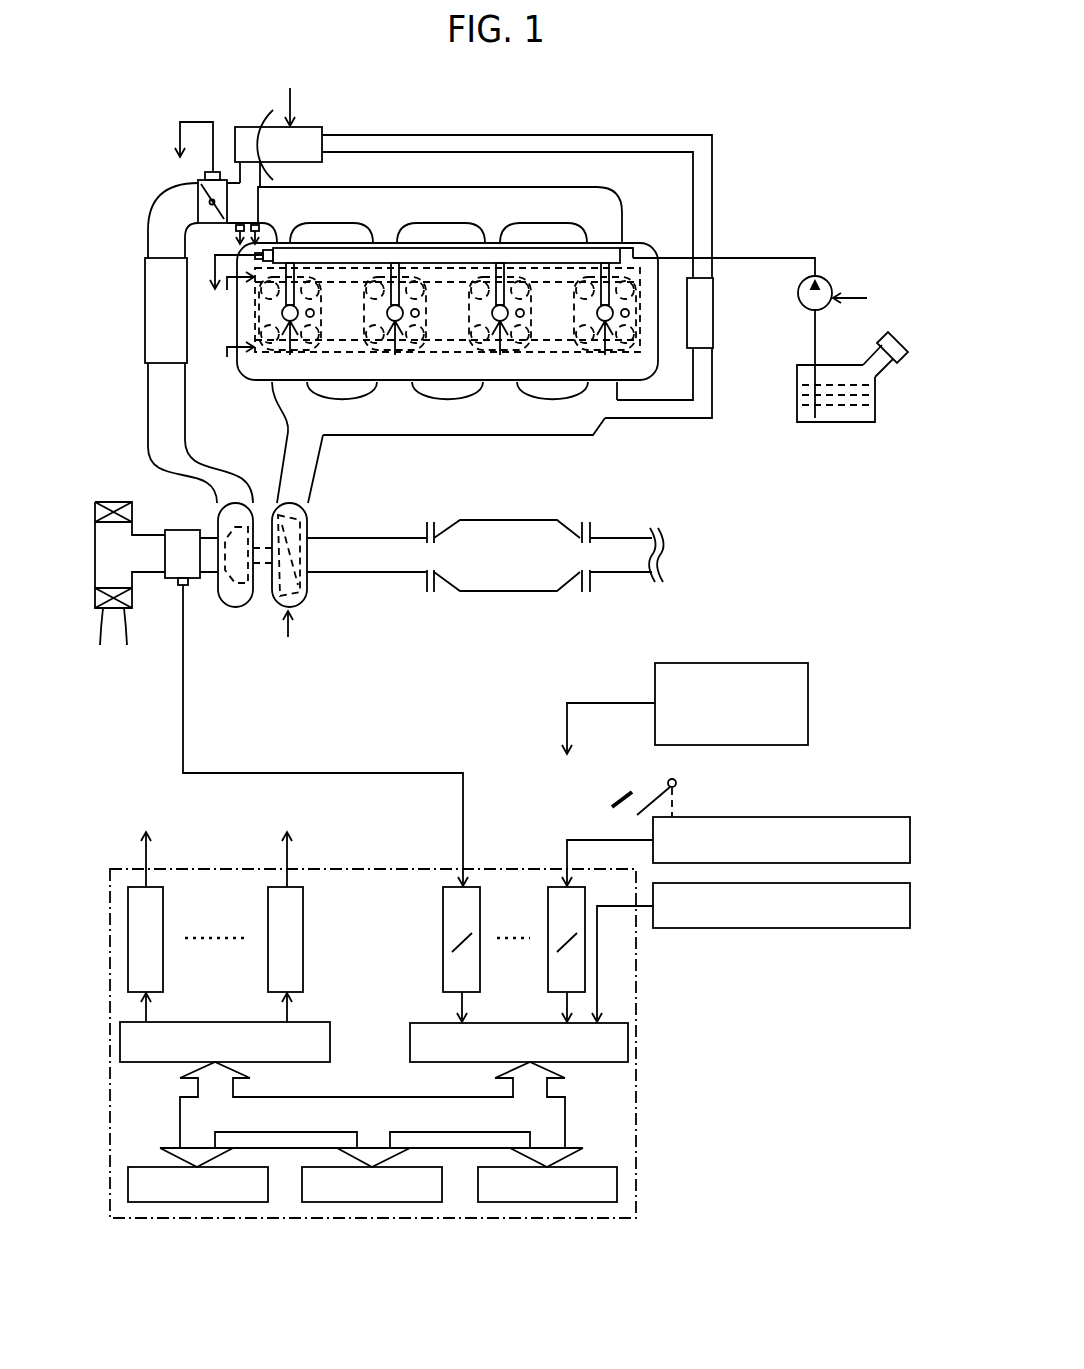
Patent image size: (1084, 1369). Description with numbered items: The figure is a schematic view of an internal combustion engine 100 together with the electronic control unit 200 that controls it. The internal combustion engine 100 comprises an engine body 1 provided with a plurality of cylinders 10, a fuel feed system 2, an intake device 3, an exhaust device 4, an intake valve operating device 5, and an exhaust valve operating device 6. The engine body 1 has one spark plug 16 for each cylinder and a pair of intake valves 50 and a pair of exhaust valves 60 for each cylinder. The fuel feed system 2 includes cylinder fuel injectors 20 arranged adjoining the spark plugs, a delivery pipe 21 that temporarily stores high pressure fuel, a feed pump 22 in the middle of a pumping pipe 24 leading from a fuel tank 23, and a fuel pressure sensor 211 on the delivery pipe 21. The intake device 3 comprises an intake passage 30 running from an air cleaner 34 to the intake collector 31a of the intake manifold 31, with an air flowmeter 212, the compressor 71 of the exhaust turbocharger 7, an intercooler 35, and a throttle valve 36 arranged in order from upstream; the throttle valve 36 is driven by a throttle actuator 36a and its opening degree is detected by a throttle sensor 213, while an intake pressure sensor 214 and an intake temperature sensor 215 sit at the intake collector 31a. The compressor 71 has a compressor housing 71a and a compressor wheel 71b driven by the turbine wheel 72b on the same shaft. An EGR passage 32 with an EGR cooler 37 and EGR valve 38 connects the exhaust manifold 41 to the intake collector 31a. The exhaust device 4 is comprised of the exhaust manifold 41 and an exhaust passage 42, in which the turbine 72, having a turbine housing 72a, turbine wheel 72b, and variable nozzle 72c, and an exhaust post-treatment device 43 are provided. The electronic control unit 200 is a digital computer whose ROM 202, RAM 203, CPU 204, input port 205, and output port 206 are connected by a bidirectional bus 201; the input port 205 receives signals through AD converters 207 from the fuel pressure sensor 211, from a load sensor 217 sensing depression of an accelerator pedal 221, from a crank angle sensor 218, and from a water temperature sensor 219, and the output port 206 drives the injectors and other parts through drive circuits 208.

The engine body 1 is at (647, 243).
The fuel feed system 2 is at (790, 242).
The intake device 3 is at (103, 243).
The exhaust device 4 is at (558, 461).
The intake valve operating device 5 is at (640, 283).
The exhaust valve operating device 6 is at (632, 330).
The exhaust turbocharger 7 is at (335, 665).
The cylinder 10 is at (620, 283).
The spark plug 16 is at (312, 318).
The cylinder fuel injector 20 is at (620, 310).
The delivery pipe 21 is at (604, 248).
The feed pump 22 is at (830, 276).
The fuel tank 23 is at (834, 423).
The pumping pipe 24 is at (737, 257).
The intake passage 30 is at (148, 420).
The intake manifold 31 is at (500, 188).
The intake collector 31a is at (262, 188).
The EGR passage 32 is at (477, 136).
The air cleaner 34 is at (133, 600).
The intercooler 35 is at (143, 322).
The throttle valve 36 is at (217, 172).
The throttle actuator 36a is at (198, 185).
The EGR cooler 37 is at (714, 318).
The EGR valve 38 is at (313, 127).
The exhaust manifold 41 is at (431, 436).
The exhaust passage 42 is at (627, 574).
The exhaust post-treatment device 43 is at (510, 593).
The intake valve 50 is at (348, 335).
The exhaust valve 60 is at (376, 330).
The compressor 71 is at (242, 600).
The compressor housing 71a is at (221, 600).
The compressor wheel 71b is at (232, 587).
The turbine 72 is at (298, 604).
The turbine housing 72a is at (310, 590).
The turbine wheel 72b is at (308, 535).
The variable nozzle 72c is at (292, 503).
The internal combustion engine 100 is at (748, 160).
The electronic control unit 200 is at (330, 868).
The bidirectional bus 201 is at (566, 1122).
The ROM 202 is at (210, 1202).
The RAM 203 is at (370, 1202).
The CPU 204 is at (553, 1202).
The input port 205 is at (422, 1022).
The output port 206 is at (320, 1022).
The AD converter 207 is at (548, 905).
The drive circuit 208 is at (268, 896).
The fuel pressure sensor 211 is at (265, 261).
The air flowmeter 212 is at (183, 530).
The throttle sensor 213 is at (194, 128).
The intake pressure sensor 214 is at (236, 229).
The intake temperature sensor 215 is at (292, 233).
The load sensor 217 is at (845, 817).
The crank angle sensor 218 is at (866, 930).
The water temperature sensor 219 is at (800, 663).
The accelerator pedal 221 is at (645, 800).